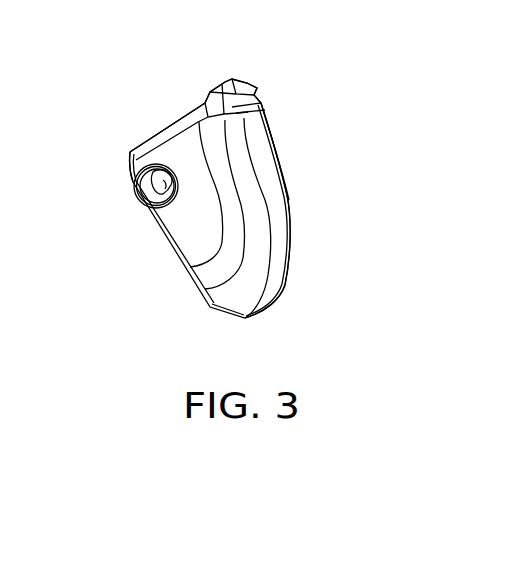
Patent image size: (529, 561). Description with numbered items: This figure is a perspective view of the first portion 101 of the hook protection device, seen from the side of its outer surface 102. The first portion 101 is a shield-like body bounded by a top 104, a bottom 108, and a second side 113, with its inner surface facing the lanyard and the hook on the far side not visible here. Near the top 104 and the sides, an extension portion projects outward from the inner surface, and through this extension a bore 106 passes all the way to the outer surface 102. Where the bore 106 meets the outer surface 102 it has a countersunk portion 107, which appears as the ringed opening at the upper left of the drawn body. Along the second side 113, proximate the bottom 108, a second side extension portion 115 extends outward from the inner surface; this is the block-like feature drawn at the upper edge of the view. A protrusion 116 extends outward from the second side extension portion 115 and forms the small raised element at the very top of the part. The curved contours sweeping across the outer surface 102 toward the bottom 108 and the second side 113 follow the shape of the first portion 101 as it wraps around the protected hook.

The first portion 101 is at (90, 193).
The outer surface 102 is at (190, 241).
The top 104 is at (124, 150).
The bore 106 is at (152, 200).
The countersunk portion 107 is at (143, 173).
The bottom 108 is at (302, 237).
The second side 113 is at (193, 78).
The second side extension portion 115 is at (260, 100).
The protrusion 116 is at (248, 82).